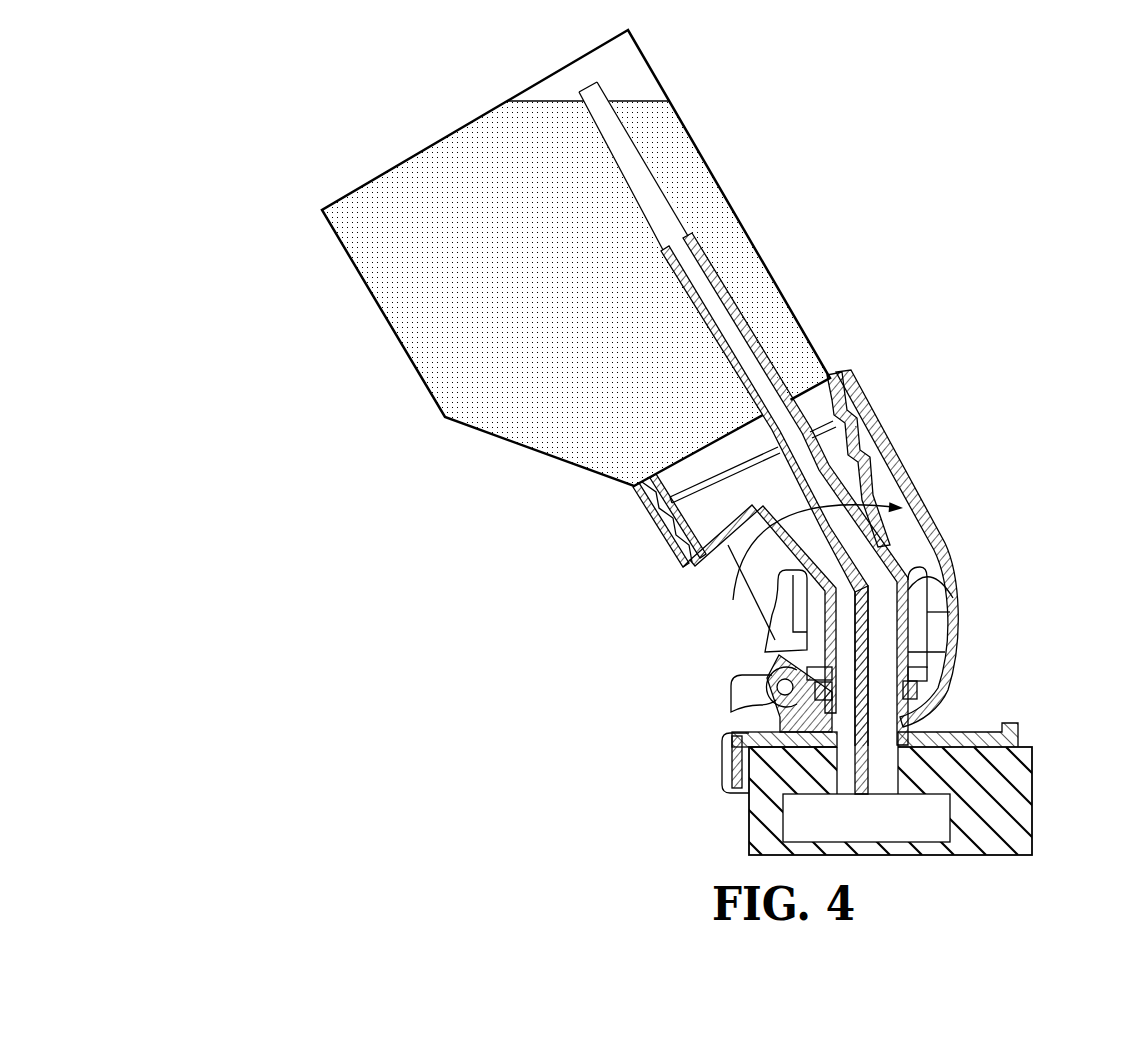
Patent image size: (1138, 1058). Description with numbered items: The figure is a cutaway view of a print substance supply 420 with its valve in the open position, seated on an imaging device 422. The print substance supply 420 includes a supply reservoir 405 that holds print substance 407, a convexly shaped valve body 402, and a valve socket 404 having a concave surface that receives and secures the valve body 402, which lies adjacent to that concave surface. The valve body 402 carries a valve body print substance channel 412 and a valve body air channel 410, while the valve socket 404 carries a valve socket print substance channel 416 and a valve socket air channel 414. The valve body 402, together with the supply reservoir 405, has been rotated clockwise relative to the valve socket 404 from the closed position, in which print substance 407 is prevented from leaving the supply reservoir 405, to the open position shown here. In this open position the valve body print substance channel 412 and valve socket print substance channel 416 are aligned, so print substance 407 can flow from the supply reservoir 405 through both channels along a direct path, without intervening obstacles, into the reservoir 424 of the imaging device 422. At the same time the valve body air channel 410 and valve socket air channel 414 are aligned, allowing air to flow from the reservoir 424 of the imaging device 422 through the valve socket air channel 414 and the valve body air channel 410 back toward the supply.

The print substance supply 420 is at (313, 102).
The supply reservoir 405 is at (347, 253).
The print substance 407 is at (420, 335).
The valve body 402 is at (953, 585).
The valve socket 404 is at (955, 618).
The valve body air channel 410 is at (957, 657).
The valve body print substance channel 412 is at (780, 652).
The valve socket air channel 414 is at (913, 722).
The valve socket print substance channel 416 is at (782, 722).
The imaging device 422 is at (1032, 827).
The reservoir 424 is at (955, 810).